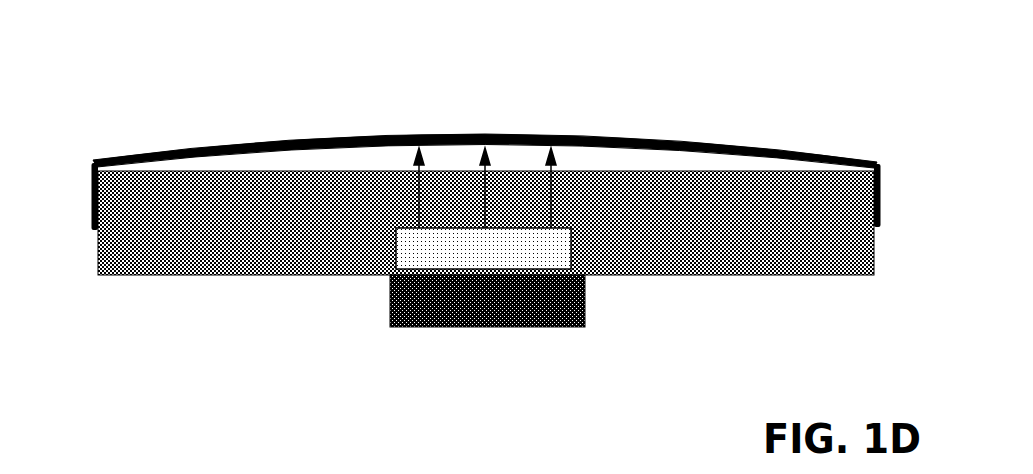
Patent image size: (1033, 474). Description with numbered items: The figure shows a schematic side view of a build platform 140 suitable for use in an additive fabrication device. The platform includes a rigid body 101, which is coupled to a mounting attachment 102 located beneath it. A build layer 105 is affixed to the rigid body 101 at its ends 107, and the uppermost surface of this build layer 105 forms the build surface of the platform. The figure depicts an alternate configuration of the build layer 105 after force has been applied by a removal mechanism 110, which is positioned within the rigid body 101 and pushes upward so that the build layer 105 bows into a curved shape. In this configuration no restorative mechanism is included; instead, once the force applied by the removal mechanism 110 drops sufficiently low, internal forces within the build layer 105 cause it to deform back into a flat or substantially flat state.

The light emitting device 140 is at (104, 40).
The rigid body 101 is at (697, 237).
The mounting attachment 102 is at (417, 327).
The build layer 105 is at (620, 138).
The ends 107 is at (90, 193).
The removal mechanism 110 is at (483, 248).